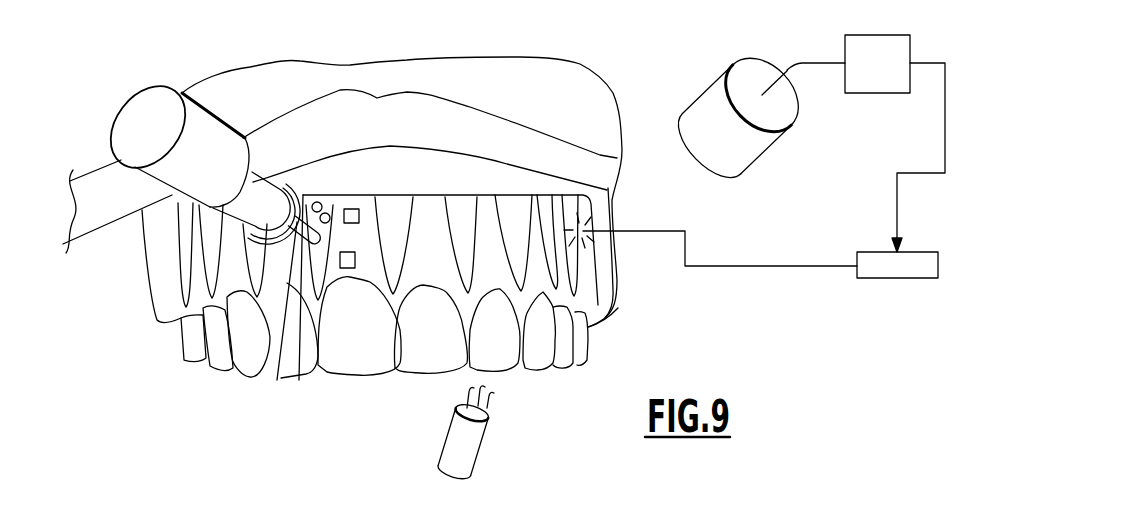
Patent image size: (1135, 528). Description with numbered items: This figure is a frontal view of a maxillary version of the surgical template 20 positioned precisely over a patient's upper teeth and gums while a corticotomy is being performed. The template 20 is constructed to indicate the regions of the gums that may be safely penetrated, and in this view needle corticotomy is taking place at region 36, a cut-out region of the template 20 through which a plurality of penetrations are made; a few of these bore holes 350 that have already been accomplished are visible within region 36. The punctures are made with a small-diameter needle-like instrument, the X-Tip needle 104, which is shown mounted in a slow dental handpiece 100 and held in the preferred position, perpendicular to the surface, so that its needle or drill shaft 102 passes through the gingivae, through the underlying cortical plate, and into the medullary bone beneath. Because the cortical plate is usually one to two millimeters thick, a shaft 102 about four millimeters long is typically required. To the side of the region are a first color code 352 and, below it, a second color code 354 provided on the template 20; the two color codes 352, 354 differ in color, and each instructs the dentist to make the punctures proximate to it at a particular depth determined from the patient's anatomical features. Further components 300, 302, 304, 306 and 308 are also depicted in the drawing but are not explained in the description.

The surgical template 20 is at (658, 201).
The region 36 is at (299, 380).
The slow dental handpiece 100 is at (96, 213).
The needle or drill shaft 102 is at (277, 380).
The X-Tip needle 104 is at (252, 183).
The light source package 300 is at (480, 445).
The light source 302 is at (753, 148).
The controller 304 is at (892, 94).
The connecting wire 306 is at (772, 268).
The sensor unit 308 is at (900, 280).
The bore holes 350 is at (330, 214).
The first color code 352 is at (359, 216).
The second color code 354 is at (356, 260).